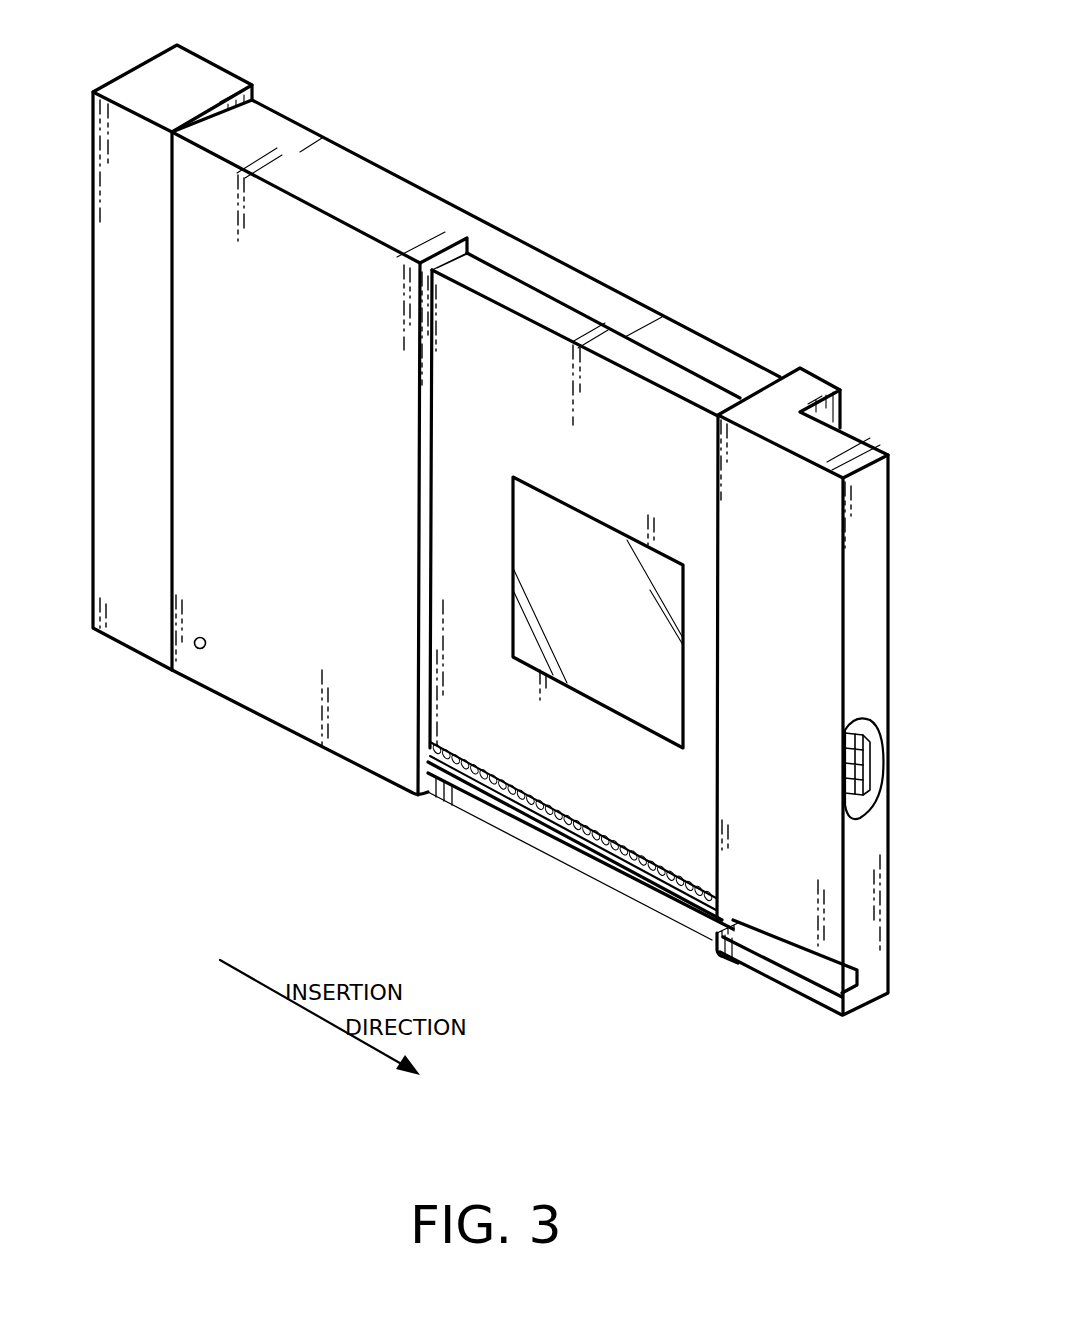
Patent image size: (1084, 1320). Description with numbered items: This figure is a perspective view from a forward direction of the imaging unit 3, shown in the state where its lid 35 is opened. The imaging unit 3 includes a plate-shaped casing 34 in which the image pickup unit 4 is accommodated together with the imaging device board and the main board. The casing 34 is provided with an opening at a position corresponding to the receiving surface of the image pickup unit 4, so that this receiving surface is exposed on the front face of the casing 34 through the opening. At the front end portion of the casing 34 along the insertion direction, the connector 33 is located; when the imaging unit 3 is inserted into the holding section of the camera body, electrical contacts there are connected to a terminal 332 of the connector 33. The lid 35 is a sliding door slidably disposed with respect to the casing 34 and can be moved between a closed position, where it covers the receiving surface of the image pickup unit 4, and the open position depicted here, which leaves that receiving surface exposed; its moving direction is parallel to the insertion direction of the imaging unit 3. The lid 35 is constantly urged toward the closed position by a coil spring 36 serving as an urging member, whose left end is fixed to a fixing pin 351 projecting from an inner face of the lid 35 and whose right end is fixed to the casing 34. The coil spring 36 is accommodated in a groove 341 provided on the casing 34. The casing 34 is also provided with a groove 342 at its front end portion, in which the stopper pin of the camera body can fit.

The imaging unit 3 is at (543, 92).
The connector 33 is at (877, 762).
The terminal 332 is at (878, 794).
The casing 34 is at (505, 234).
The groove 341 is at (608, 855).
The groove 342 is at (813, 965).
The lid 35 is at (306, 252).
The fixing pin 351 is at (195, 648).
The coil spring 36 is at (532, 818).
The image pickup unit 4 is at (597, 545).